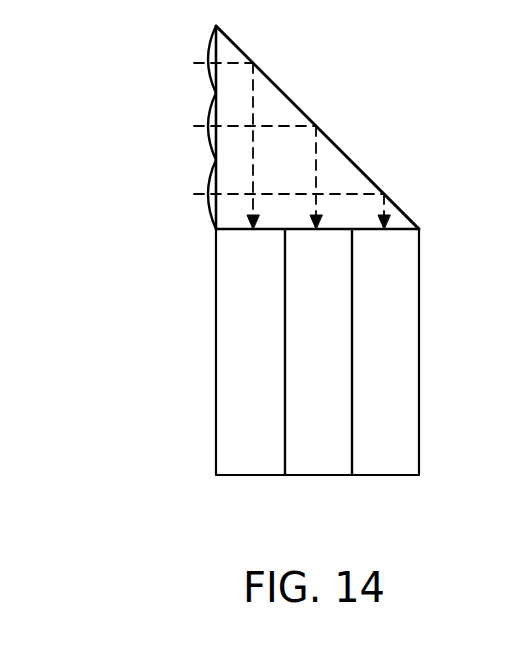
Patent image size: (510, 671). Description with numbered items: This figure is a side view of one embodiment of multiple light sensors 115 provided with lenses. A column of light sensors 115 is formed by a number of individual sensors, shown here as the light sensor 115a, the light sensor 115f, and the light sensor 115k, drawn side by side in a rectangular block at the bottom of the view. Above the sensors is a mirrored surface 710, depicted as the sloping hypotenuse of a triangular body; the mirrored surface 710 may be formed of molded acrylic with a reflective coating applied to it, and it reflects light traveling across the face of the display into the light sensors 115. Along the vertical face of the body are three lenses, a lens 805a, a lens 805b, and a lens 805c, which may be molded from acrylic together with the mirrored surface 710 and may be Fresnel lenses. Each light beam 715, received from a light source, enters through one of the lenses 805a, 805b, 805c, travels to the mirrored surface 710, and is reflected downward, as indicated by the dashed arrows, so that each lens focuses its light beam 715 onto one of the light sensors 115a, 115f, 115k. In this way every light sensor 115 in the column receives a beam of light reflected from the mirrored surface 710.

The light sensor 115 is at (357, 61).
The mirrored surface 710 is at (342, 152).
The light beam 715 is at (185, 63).
The lens 805a is at (208, 50).
The lens 805b is at (208, 116).
The lens 805c is at (208, 182).
The light sensor 115a is at (252, 476).
The light sensor 115f is at (323, 476).
The light sensor 115k is at (392, 476).